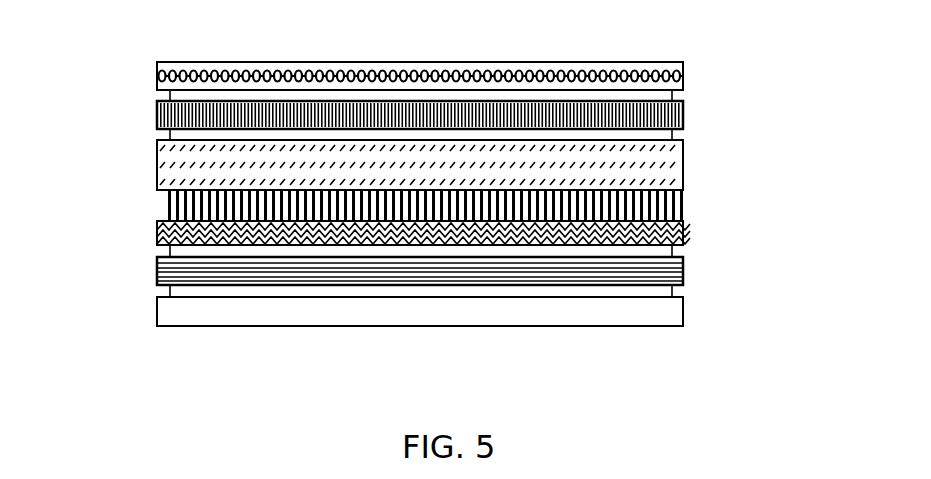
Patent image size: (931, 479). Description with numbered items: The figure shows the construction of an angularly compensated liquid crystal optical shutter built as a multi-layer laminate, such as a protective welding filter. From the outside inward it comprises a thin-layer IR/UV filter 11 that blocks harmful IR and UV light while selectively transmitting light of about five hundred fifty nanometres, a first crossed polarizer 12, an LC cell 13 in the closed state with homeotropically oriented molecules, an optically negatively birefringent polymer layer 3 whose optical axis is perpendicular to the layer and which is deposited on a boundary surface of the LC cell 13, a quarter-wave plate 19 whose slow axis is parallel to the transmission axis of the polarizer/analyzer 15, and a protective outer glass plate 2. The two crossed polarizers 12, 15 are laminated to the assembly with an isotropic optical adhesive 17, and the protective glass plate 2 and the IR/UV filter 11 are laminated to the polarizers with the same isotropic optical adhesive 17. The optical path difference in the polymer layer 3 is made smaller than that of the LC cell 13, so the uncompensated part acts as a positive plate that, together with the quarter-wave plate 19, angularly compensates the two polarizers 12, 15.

The thin-layer IR/UV filter 11 is at (663, 80).
The crossed polarizer 12 is at (663, 108).
The LC cell 13 is at (683, 160).
The optically negatively birefringent polymer layer 3 is at (672, 203).
The quarter-wave plate 19 is at (683, 238).
The polarizer/analyzer 15 is at (672, 277).
The protective glass plate 2 is at (657, 313).
The isotropic optical adhesive 17 is at (80, 178).